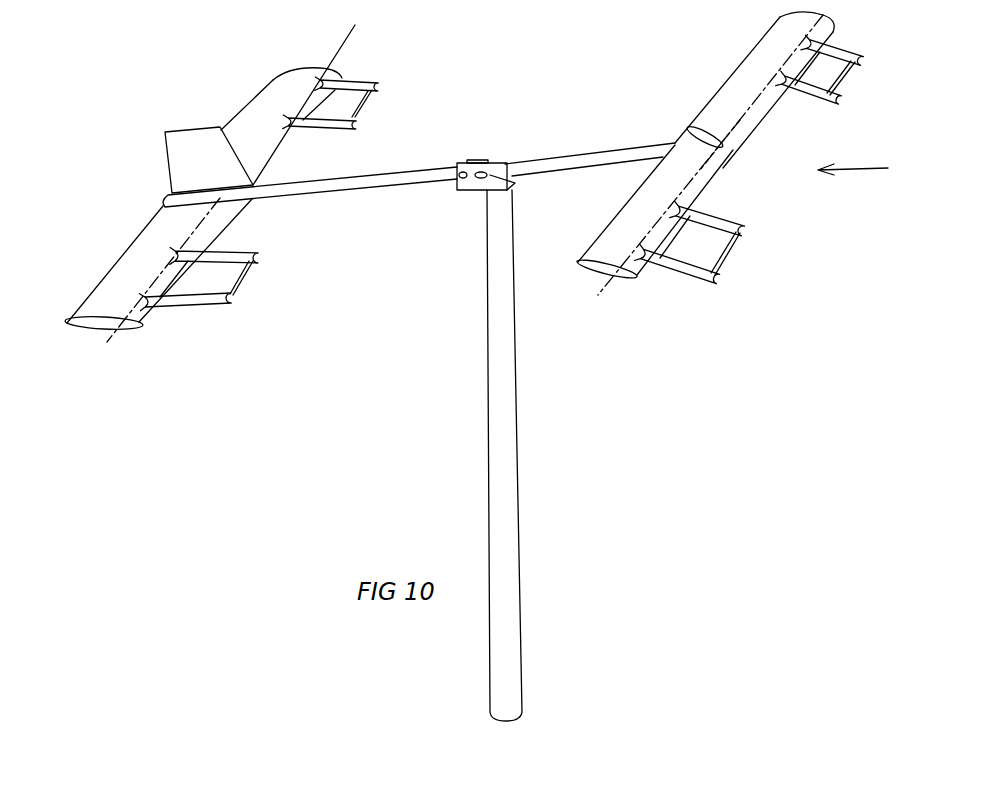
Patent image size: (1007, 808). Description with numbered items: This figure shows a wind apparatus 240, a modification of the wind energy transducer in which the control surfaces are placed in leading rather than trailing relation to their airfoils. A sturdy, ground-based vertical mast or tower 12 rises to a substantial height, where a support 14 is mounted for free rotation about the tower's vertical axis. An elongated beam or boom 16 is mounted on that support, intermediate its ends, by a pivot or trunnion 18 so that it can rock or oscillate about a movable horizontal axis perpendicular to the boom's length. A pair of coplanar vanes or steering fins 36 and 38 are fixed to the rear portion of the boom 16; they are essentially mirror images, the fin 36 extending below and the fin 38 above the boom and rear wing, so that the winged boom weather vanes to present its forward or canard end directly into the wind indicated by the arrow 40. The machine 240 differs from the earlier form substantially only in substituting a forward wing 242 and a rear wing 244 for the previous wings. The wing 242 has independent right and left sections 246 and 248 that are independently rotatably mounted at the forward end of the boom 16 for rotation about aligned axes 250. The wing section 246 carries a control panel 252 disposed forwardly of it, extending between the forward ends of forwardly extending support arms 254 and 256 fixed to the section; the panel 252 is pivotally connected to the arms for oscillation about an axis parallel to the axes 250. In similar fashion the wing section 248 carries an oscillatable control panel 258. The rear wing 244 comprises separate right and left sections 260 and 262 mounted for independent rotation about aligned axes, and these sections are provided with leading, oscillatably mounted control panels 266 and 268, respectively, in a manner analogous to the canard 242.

The mast or tower 12 is at (508, 448).
The support 14 is at (453, 198).
The beam or boom 16 is at (412, 173).
The pivot or trunnion 18 is at (477, 187).
The steering fin 36 is at (180, 270).
The steering fin 38 is at (173, 141).
The wind arrow 40 is at (853, 170).
The wind apparatus 240 is at (336, 373).
The wing or canard 242 is at (765, 91).
The rear wing 244 is at (295, 105).
The wing section 246 is at (669, 214).
The wing section 248 is at (743, 65).
The aligned axes 250 is at (750, 112).
The control panel 252 is at (725, 253).
The support arm 254 is at (708, 220).
The support arm 256 is at (673, 265).
The control panel 258 is at (847, 88).
The wing section 260 is at (123, 265).
The wing section 262 is at (273, 82).
The control panel 266 is at (235, 277).
The control panel 268 is at (367, 102).